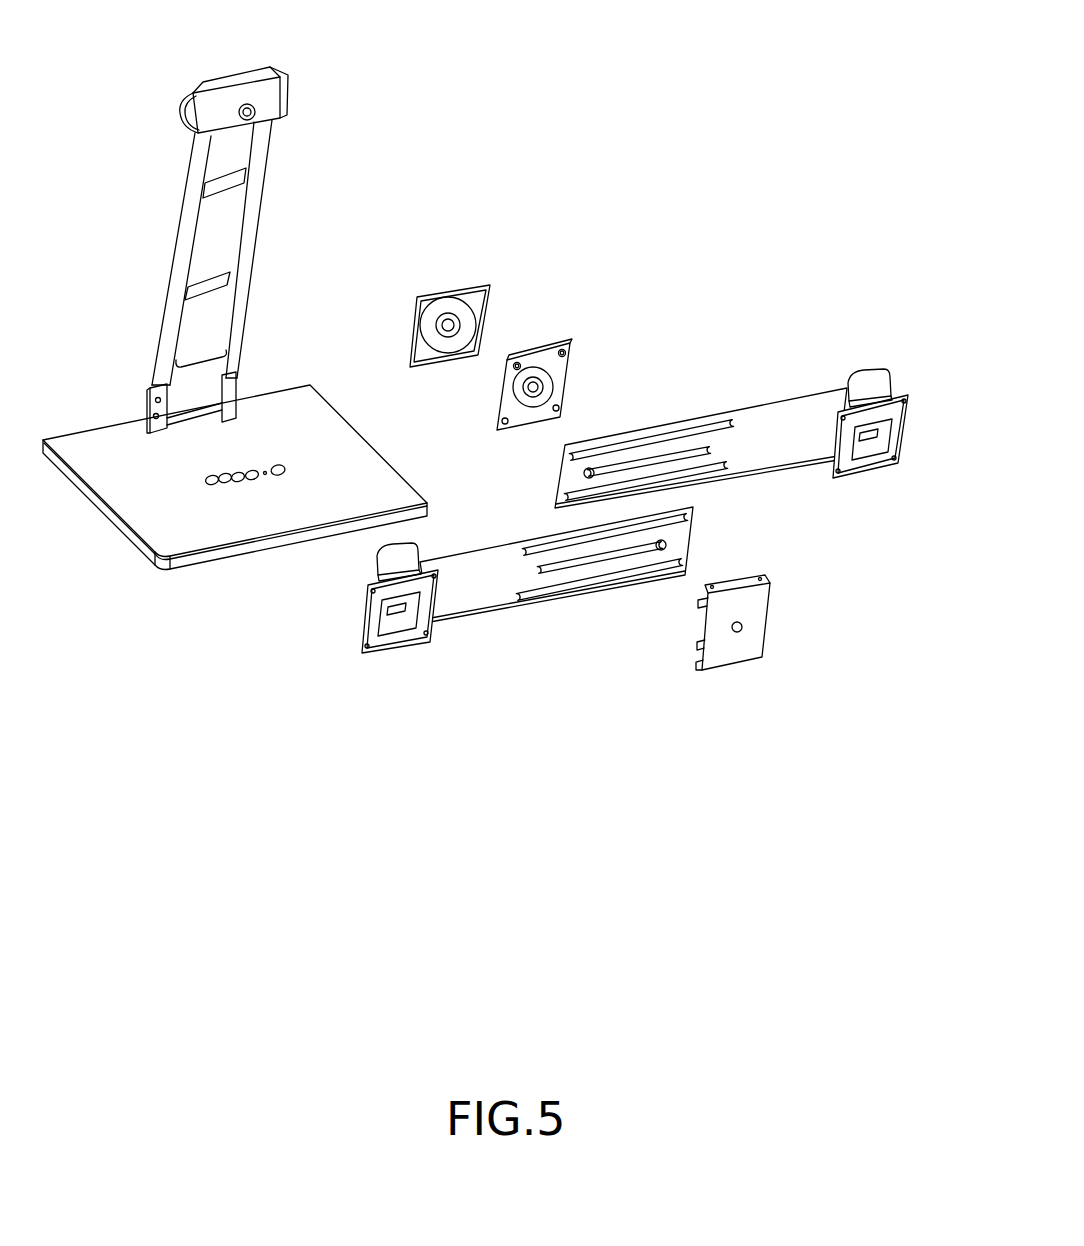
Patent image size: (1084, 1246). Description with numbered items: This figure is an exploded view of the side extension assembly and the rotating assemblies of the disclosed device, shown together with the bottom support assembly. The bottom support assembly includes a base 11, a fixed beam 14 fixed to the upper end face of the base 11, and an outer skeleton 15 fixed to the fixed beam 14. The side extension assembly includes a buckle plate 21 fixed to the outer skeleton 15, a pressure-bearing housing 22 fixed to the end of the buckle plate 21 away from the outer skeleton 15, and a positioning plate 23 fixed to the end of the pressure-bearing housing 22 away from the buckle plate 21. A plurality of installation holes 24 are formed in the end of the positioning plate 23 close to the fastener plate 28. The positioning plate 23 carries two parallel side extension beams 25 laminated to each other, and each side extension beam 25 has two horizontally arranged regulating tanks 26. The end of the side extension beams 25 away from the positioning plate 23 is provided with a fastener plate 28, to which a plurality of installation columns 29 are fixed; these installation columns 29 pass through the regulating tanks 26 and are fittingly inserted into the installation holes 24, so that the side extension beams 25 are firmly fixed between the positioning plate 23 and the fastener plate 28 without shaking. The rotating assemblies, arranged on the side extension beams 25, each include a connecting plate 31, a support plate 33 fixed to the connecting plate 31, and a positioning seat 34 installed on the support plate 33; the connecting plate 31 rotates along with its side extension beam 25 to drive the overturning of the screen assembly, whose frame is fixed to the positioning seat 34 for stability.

The base 11 is at (147, 500).
The fixed beam 14 is at (153, 403).
The outer skeleton 15 is at (173, 285).
The buckle plate 21 is at (220, 110).
The pressure-bearing housing 22 is at (450, 297).
The positioning plate 23 is at (589, 314).
The installation holes 24 is at (513, 407).
The side extension beams 25 is at (727, 389).
The regulating tank 26 is at (633, 447).
The fastener plate 28 is at (711, 672).
The installation columns 29 is at (703, 640).
The connecting plate 31 is at (868, 383).
The support plate 33 is at (365, 613).
The positioning seat 34 is at (899, 437).